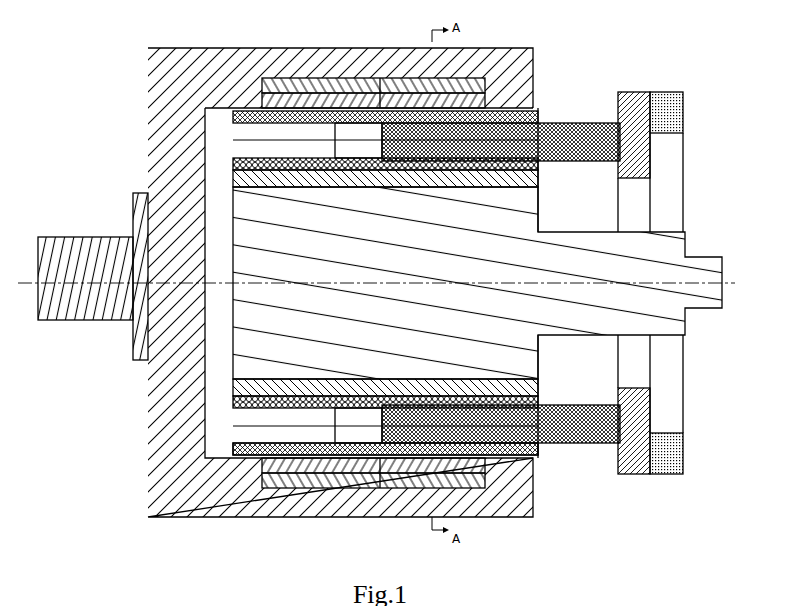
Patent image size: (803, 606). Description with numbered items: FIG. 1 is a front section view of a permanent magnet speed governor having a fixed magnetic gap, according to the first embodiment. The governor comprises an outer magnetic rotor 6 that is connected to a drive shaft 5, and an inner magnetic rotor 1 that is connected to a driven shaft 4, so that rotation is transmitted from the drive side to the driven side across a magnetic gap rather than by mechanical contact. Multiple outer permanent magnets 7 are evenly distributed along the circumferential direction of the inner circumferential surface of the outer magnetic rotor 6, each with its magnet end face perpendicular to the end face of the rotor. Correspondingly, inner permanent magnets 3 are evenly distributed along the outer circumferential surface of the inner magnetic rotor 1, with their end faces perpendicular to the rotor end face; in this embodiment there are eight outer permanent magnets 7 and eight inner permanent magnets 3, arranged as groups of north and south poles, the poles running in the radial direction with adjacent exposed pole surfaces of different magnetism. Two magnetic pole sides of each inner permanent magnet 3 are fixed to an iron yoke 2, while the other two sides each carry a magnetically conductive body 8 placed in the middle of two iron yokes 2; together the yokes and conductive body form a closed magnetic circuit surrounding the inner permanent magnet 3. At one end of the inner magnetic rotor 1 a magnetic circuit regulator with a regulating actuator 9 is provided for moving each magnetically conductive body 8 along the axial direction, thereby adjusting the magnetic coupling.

The inner magnetic rotor 1 is at (60, 237).
The iron yoke 2 is at (352, 97).
The inner permanent magnet 3 is at (385, 145).
The driven shaft 4 is at (385, 444).
The drive shaft 5 is at (385, 418).
The outer magnetic rotor 6 is at (167, 65).
The outer permanent magnet 7 is at (686, 257).
The magnetically conductive body 8 is at (630, 92).
The regulating actuator 9 is at (673, 92).